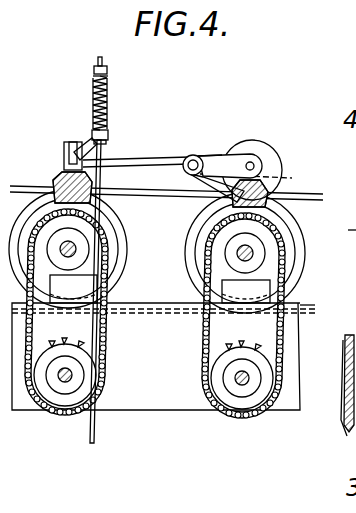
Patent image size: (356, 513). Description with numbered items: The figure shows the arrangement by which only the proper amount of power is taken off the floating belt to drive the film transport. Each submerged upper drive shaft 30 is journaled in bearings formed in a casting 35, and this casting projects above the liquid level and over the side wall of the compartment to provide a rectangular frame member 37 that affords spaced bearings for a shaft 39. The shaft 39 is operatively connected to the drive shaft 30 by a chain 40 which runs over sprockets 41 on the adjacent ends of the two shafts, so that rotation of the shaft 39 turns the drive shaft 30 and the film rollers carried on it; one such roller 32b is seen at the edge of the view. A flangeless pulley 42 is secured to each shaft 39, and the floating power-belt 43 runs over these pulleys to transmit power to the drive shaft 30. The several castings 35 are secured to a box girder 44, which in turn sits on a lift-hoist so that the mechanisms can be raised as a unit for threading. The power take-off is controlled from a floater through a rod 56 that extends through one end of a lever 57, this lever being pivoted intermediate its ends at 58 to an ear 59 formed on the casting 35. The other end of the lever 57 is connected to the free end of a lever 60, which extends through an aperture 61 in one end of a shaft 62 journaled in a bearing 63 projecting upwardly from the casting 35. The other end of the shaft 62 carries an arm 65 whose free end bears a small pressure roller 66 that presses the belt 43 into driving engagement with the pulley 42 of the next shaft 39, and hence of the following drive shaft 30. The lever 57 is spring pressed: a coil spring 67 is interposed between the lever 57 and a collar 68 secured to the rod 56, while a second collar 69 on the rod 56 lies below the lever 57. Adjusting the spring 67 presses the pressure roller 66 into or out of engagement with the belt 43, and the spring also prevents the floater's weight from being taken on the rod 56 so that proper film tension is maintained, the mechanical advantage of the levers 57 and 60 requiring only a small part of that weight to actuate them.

The drive shaft 30 is at (62, 380).
The guide member 32b is at (350, 424).
The casting 35 is at (58, 183).
The rectangular frame member 37 is at (112, 278).
The shaft 39 is at (252, 253).
The chain 40 is at (68, 412).
The sprocket 41 is at (62, 393).
The flangeless pulley 42 is at (118, 228).
The floating power-belt 43 is at (300, 194).
The box girder 44 is at (280, 412).
The rod 56 is at (93, 437).
The lever 57 is at (82, 148).
The pivot 58 is at (63, 152).
The ear 59 is at (65, 145).
The lever 60 is at (125, 160).
The aperture 61 is at (205, 156).
The shaft 62 is at (191, 155).
The bearing 63 is at (195, 175).
The arm 65 is at (217, 157).
The pressure roller 66 is at (260, 148).
The coil spring 67 is at (106, 100).
The collar 68 is at (96, 69).
The collar 69 is at (108, 137).